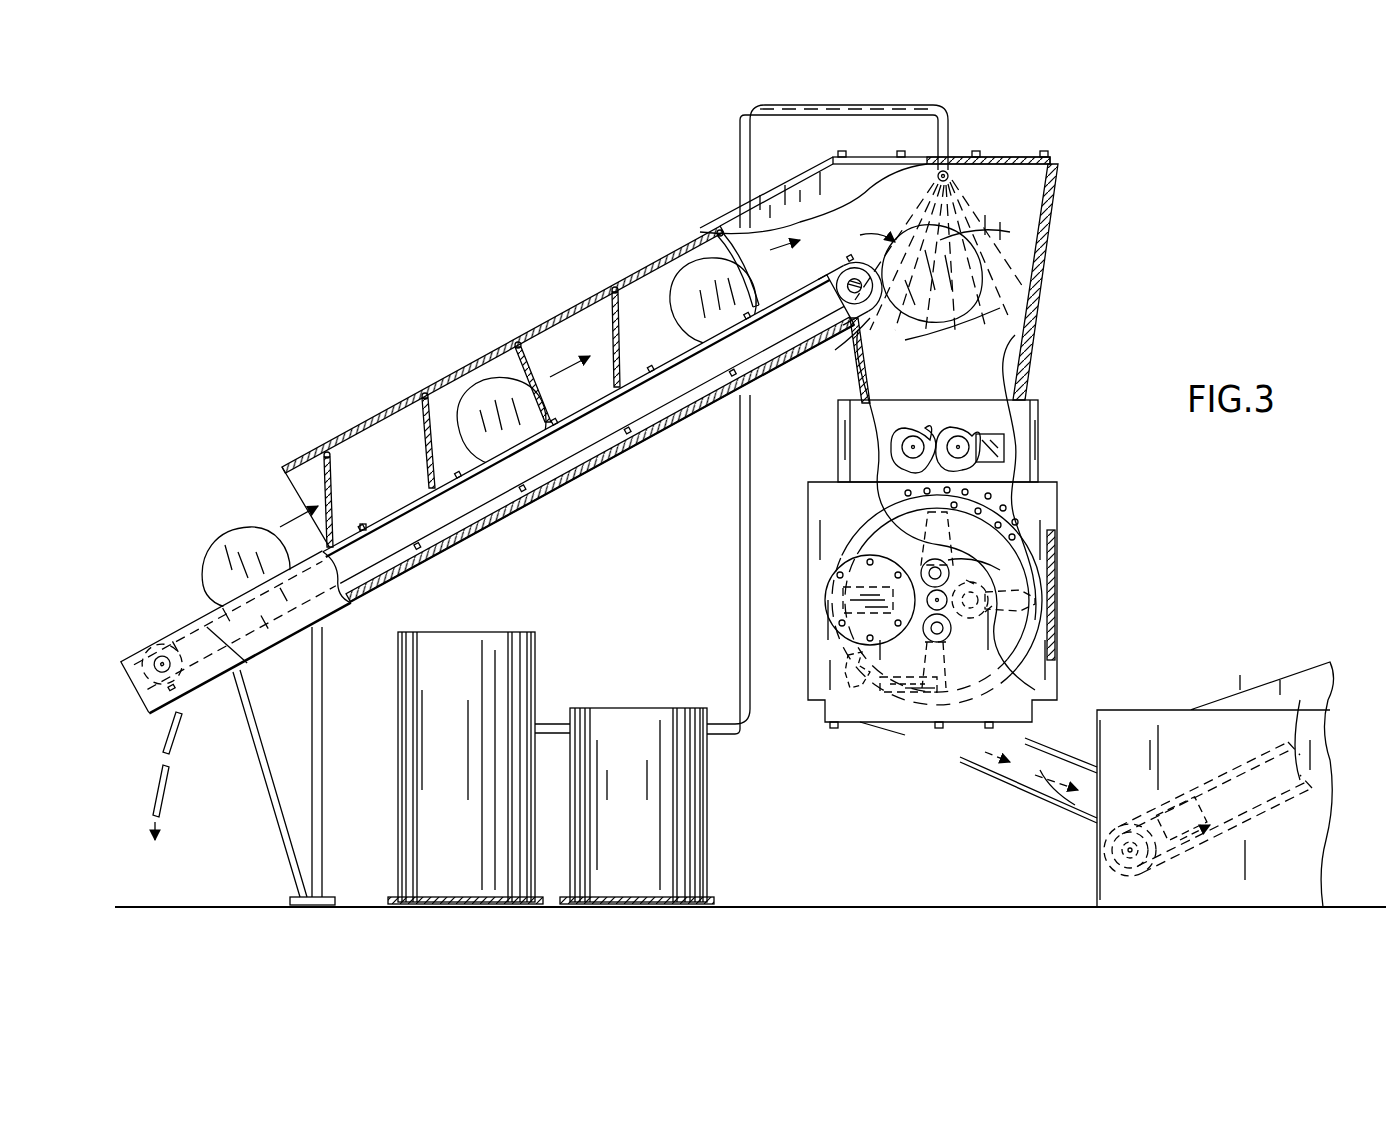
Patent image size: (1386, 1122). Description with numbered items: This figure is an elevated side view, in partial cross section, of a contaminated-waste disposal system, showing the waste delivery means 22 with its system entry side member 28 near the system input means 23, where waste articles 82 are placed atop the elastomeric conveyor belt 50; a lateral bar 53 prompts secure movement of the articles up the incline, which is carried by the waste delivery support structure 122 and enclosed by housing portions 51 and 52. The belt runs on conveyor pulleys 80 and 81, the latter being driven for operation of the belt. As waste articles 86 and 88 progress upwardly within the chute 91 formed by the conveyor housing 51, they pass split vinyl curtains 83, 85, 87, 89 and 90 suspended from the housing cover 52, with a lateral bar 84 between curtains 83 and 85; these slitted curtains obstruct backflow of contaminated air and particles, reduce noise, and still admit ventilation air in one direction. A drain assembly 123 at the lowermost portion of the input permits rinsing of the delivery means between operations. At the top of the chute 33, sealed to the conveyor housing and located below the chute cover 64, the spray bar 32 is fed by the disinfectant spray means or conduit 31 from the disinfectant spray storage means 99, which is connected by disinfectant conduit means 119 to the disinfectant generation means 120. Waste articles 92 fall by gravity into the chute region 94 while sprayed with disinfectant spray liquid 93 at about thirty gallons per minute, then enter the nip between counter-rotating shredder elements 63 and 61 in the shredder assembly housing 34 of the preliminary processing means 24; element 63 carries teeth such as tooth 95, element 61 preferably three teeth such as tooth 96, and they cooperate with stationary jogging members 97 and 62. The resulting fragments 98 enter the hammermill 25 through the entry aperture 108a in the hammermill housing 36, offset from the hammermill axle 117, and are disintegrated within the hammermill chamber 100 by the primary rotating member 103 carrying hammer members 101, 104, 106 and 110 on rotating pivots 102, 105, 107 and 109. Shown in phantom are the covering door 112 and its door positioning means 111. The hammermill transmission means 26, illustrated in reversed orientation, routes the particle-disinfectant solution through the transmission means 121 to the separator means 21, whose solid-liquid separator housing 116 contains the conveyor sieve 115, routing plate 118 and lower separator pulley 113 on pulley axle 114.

The solid waste-liquid solution separator means 21 is at (1248, 688).
The waste delivery means 22 is at (487, 340).
The system input means 23 is at (220, 700).
The preliminary processing means 24 is at (1030, 385).
The hammermill 25 is at (1062, 492).
The hammermill transmission means 26 is at (968, 782).
The system entry side member 28 is at (242, 658).
The disinfectant conduit 31 is at (948, 128).
The spray bar 32 is at (958, 170).
The chute 33 is at (1045, 232).
The shredder assembly housing 34 is at (1042, 466).
The hammermill housing 36 is at (1058, 580).
The elastomeric conveyor belt 50 is at (165, 640).
The conveyor housing 51 is at (500, 520).
The housing cover 52 is at (400, 400).
The lateral bar 53 is at (225, 588).
The shredder element 61 is at (987, 437).
The jogging member 62 is at (1000, 448).
The shredder element 63 is at (922, 432).
The preliminary processing means chute cover 64 is at (872, 152).
The conveyor pulley 80 is at (158, 676).
The conveyor pulley 81 is at (845, 282).
The waste articles 82 is at (222, 545).
The split vinyl curtain 83 is at (328, 500).
The lateral bar 84 is at (362, 524).
The split vinyl curtain 85 is at (427, 447).
The waste articles 86 is at (465, 395).
The split vinyl curtain 87 is at (532, 380).
The waste articles 88 is at (688, 290).
The split vinyl curtain 89 is at (612, 330).
The split vinyl curtain 90 is at (740, 270).
The chute 91 is at (652, 337).
The waste articles 92 is at (975, 282).
The disinfectant spray liquid 93 is at (985, 222).
The chute region 94 is at (975, 322).
The shredder tooth 95 is at (905, 410).
The shredder tooth 96 is at (985, 425).
The jogging member 97 is at (880, 458).
The fragments 98 is at (905, 494).
The disinfectant spray storage means 99 is at (650, 730).
The hammermill chamber 100 is at (925, 692).
The hammer member 101 is at (955, 563).
The rotating pivot 102 is at (922, 560).
The primary rotating member 103 is at (945, 592).
The hammer member 104 is at (988, 600).
The rotating pivot 105 is at (1030, 604).
The hammer member 106 is at (950, 655).
The rotating pivot 107 is at (975, 622).
The entry aperture 108a is at (855, 602).
The rotating pivot 109 is at (838, 590).
The hammer member 110 is at (858, 668).
The door positioning means 111 is at (905, 728).
The covering door 112 is at (855, 700).
The lower separator pulley 113 is at (1128, 872).
The pulley axle 114 is at (1140, 848).
The conveyor sieve 115 is at (1300, 703).
The solid-liquid separator housing 116 is at (1162, 725).
The hammermill axle 117 is at (952, 575).
The routing plate 118 is at (1248, 795).
The disinfectant conduit means 119 is at (552, 728).
The disinfectant generation means 120 is at (452, 862).
The waste particle-liquid solution transmission means 121 is at (1035, 778).
The waste delivery support structure 122 is at (268, 802).
The drain assembly 123 is at (165, 740).